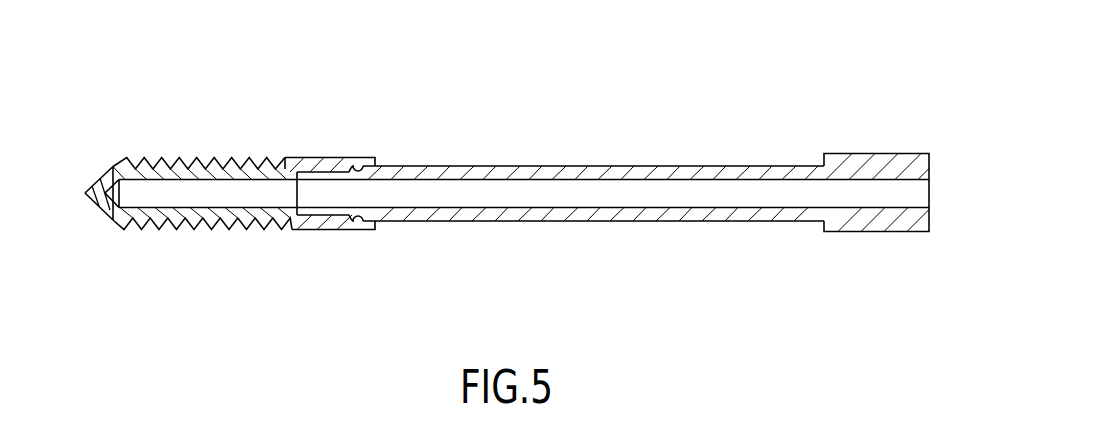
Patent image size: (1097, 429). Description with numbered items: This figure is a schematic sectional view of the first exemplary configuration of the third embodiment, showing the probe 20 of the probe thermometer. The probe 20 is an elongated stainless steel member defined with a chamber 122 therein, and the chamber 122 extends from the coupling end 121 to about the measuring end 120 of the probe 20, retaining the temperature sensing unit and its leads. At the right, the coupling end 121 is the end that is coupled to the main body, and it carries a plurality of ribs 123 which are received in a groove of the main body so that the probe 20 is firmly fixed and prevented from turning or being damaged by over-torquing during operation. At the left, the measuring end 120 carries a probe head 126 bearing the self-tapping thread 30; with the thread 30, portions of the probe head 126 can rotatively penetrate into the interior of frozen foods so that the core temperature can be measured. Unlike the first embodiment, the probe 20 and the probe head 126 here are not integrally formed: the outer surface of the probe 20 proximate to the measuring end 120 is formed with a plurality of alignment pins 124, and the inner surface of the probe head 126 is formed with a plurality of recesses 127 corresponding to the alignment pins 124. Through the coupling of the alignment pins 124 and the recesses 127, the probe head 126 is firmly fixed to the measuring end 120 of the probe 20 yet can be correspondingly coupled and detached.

The measuring end 120 is at (495, 208).
The probe head 126 is at (91, 170).
The self-tapping thread 30 is at (196, 157).
The chamber 122 is at (575, 197).
The probe 20 is at (693, 165).
The recesses 127 is at (352, 168).
The alignment pins 124 is at (353, 218).
The coupling end 121 is at (917, 143).
The ribs 123 is at (888, 225).